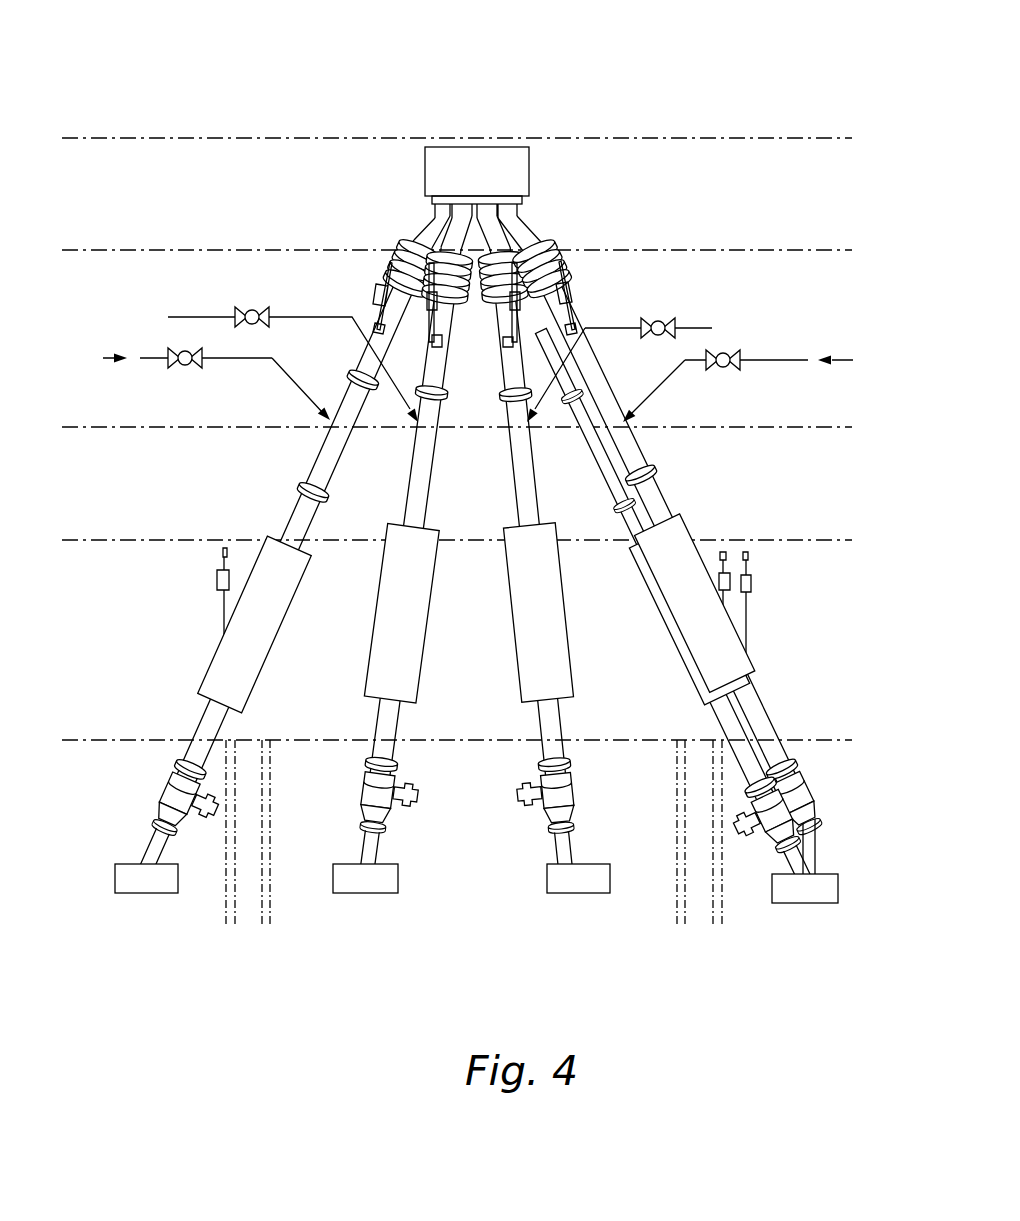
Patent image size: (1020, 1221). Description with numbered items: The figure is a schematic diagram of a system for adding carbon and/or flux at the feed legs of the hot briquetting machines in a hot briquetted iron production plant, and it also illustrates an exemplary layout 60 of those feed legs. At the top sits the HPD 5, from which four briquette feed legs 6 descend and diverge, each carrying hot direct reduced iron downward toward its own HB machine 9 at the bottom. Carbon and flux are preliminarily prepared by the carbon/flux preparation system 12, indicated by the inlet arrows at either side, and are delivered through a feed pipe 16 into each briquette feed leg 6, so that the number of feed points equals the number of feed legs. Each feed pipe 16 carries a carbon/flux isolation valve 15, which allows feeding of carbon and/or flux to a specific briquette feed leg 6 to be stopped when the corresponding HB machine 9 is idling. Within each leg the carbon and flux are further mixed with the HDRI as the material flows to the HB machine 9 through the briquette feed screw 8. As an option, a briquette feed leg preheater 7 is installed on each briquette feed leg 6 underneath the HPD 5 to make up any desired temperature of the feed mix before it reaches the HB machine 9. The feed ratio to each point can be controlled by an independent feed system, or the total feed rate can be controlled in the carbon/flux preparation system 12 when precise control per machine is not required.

The layout 60 is at (200, 76).
The HPD 5 is at (512, 173).
The briquette feed leg 6 is at (625, 456).
The briquette feed leg preheater 7 is at (220, 673).
The briquette feed screw 8 is at (773, 960).
The HB machine 9 is at (476, 924).
The carbon/flux preparation system 12 is at (480, 360).
The carbon/flux isolation valve 15 is at (252, 307).
The feed pipe 16 is at (190, 317).